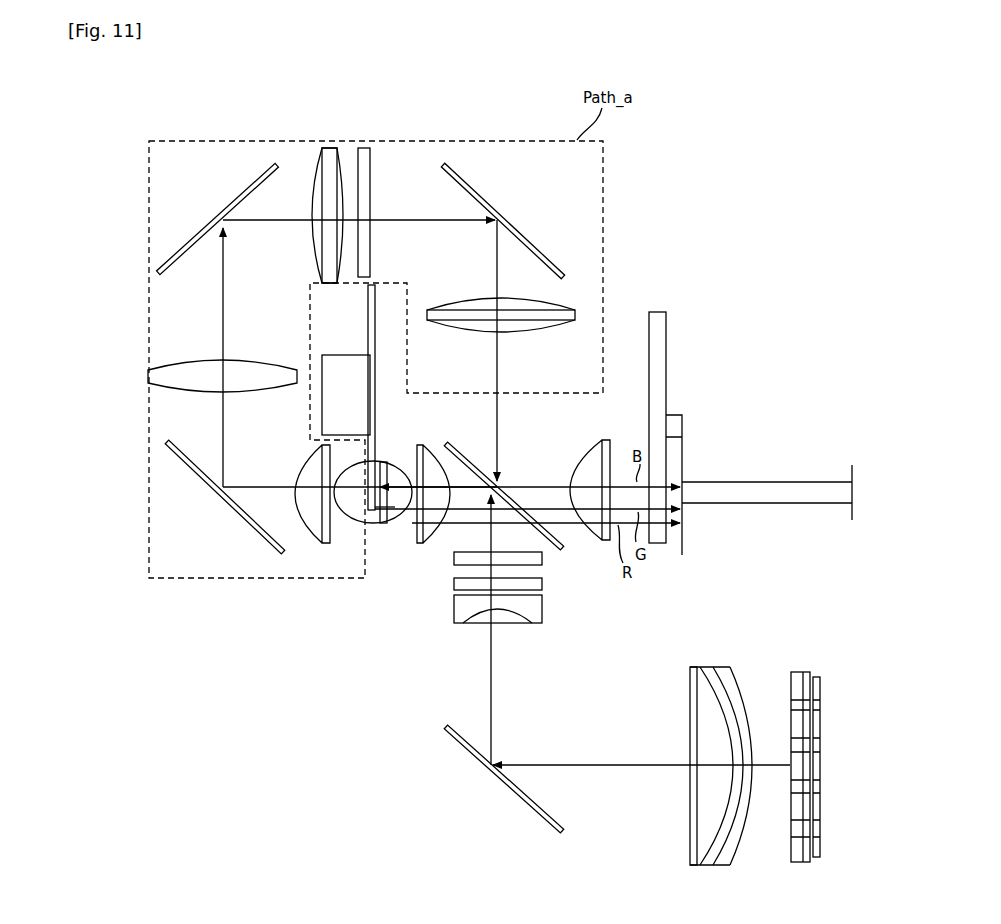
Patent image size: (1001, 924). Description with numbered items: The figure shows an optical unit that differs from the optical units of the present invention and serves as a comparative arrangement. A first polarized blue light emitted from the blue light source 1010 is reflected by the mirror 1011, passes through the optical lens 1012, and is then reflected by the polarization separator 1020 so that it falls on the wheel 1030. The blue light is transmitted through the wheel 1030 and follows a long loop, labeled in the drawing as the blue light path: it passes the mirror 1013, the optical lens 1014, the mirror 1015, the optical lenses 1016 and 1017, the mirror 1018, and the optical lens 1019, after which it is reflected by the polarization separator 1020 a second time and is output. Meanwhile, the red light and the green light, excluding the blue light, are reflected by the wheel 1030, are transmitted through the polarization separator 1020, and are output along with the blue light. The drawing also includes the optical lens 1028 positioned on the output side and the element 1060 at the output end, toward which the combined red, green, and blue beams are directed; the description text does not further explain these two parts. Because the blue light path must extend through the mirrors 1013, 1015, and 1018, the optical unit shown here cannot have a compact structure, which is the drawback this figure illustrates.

The blue light source 1010 is at (803, 672).
The mirror 1011 is at (523, 803).
The optical lens 1012 is at (542, 560).
The mirror 1013 is at (237, 510).
The optical lens 1014 is at (148, 385).
The mirror 1015 is at (195, 233).
The optical lens 1016 is at (325, 147).
The optical lens 1017 is at (363, 146).
The mirror 1018 is at (515, 223).
The optical lens 1019 is at (552, 302).
The polarization separator 1020 is at (457, 447).
The lens 1028 is at (578, 462).
The wheel 1030 is at (373, 445).
The projection lens unit 1060 is at (666, 337).